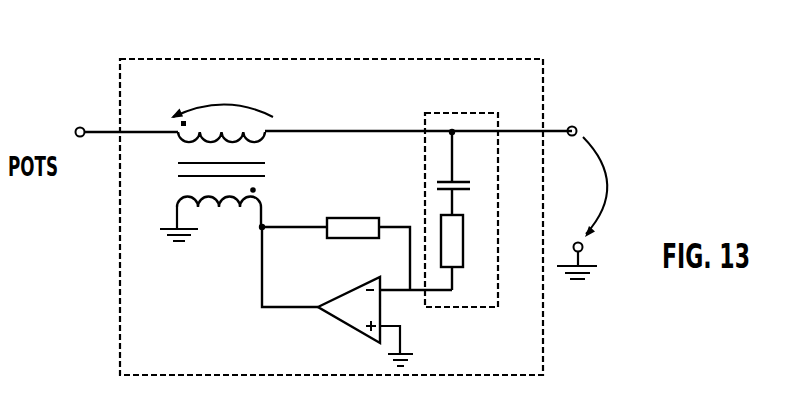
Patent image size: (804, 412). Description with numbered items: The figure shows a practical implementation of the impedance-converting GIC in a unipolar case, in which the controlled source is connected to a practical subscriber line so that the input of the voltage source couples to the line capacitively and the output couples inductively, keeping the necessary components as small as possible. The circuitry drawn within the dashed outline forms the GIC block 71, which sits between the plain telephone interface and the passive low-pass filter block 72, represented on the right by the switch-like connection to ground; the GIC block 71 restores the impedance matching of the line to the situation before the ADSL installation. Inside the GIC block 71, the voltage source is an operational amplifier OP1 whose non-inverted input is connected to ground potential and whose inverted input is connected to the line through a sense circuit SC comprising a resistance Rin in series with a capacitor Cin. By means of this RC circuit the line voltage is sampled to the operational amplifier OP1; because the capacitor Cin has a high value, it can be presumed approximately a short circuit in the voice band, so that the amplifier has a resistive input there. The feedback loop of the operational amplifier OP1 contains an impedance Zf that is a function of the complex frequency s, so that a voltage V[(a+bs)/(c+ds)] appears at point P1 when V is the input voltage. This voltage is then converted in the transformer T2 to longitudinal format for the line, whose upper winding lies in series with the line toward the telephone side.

The GIC block 71 is at (258, 60).
The passive low-pass filter block 72 is at (643, 163).
The transformer T2 is at (205, 173).
The point P1 is at (274, 213).
The impedance Zf is at (347, 215).
The operational amplifier OP1 is at (343, 292).
The sense circuit SC is at (497, 186).
The capacitor Cin is at (458, 173).
The resistance Rin is at (465, 252).